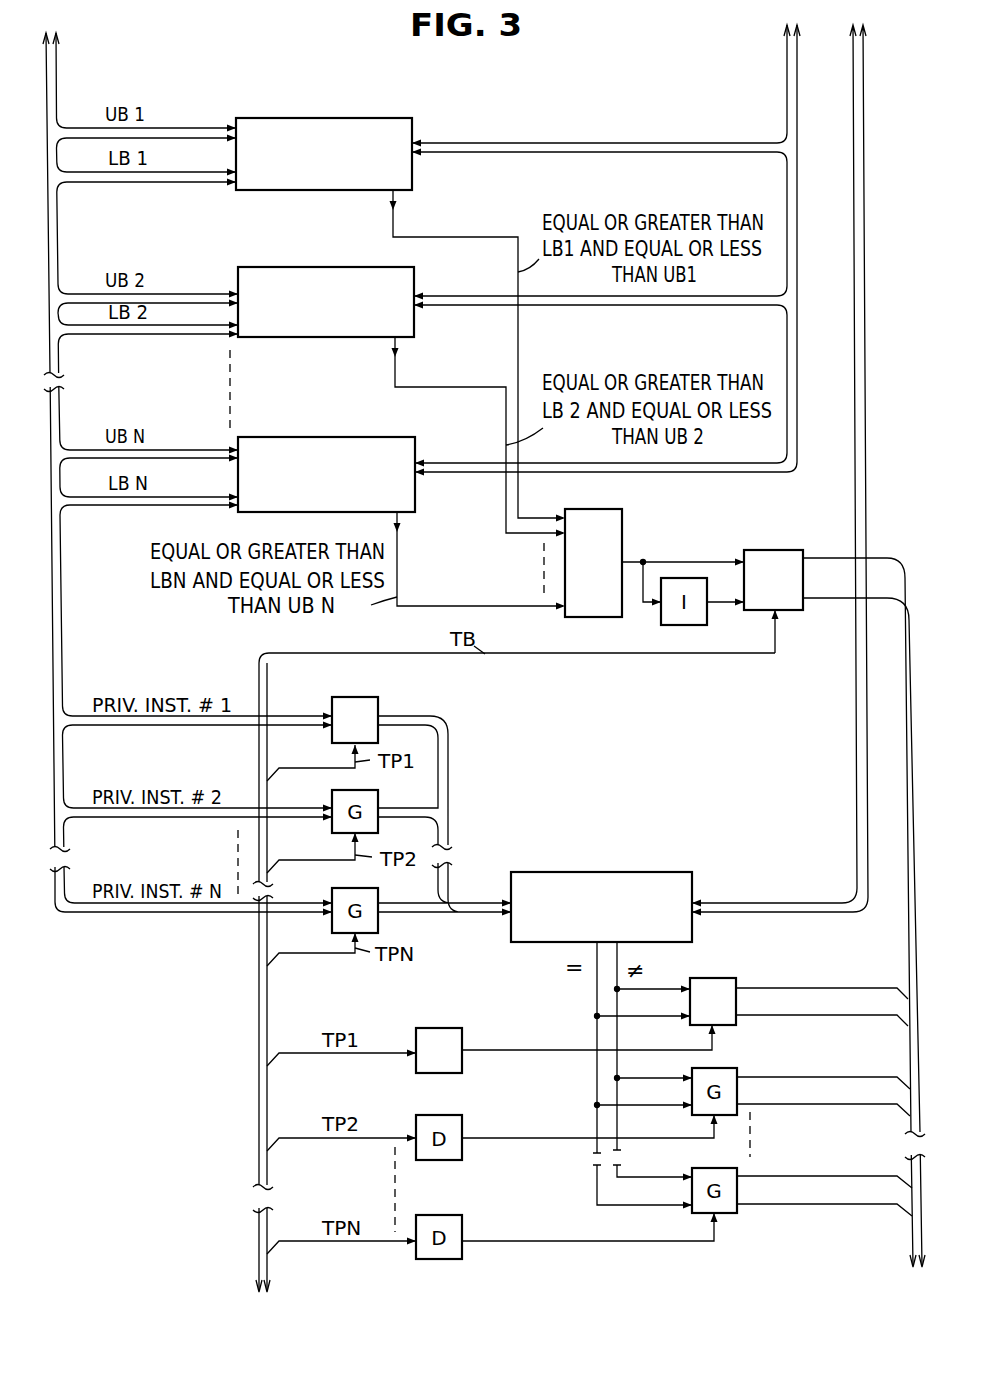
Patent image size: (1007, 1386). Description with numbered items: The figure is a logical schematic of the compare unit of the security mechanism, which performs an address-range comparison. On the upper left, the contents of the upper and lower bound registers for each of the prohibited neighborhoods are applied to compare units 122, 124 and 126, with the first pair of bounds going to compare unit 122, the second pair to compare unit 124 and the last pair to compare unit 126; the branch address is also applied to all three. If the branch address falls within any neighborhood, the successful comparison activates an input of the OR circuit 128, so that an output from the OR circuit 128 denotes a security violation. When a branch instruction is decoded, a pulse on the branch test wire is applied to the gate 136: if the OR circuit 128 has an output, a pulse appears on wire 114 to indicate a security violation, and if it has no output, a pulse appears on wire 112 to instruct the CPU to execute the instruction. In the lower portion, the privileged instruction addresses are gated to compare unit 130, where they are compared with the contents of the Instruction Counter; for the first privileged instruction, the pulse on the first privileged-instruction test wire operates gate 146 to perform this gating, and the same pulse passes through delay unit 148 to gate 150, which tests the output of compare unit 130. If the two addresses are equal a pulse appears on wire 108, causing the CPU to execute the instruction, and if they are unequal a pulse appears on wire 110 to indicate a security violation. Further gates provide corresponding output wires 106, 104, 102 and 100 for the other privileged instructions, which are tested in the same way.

The compare unit 122 is at (411, 127).
The compare unit 124 is at (414, 276).
The compare unit 126 is at (415, 499).
The OR circuit 128 is at (622, 524).
The gate 136 is at (772, 554).
The wire 114 is at (851, 558).
The wire 112 is at (851, 597).
The gate 146 is at (372, 706).
The compare unit 130 is at (692, 877).
The gate 150 is at (712, 978).
The delay unit 148 is at (462, 1032).
The wire 110 is at (803, 987).
The wire 108 is at (807, 1015).
The output line 106 is at (807, 1077).
The output line 104 is at (810, 1104).
The output line 102 is at (807, 1176).
The output line 100 is at (810, 1204).